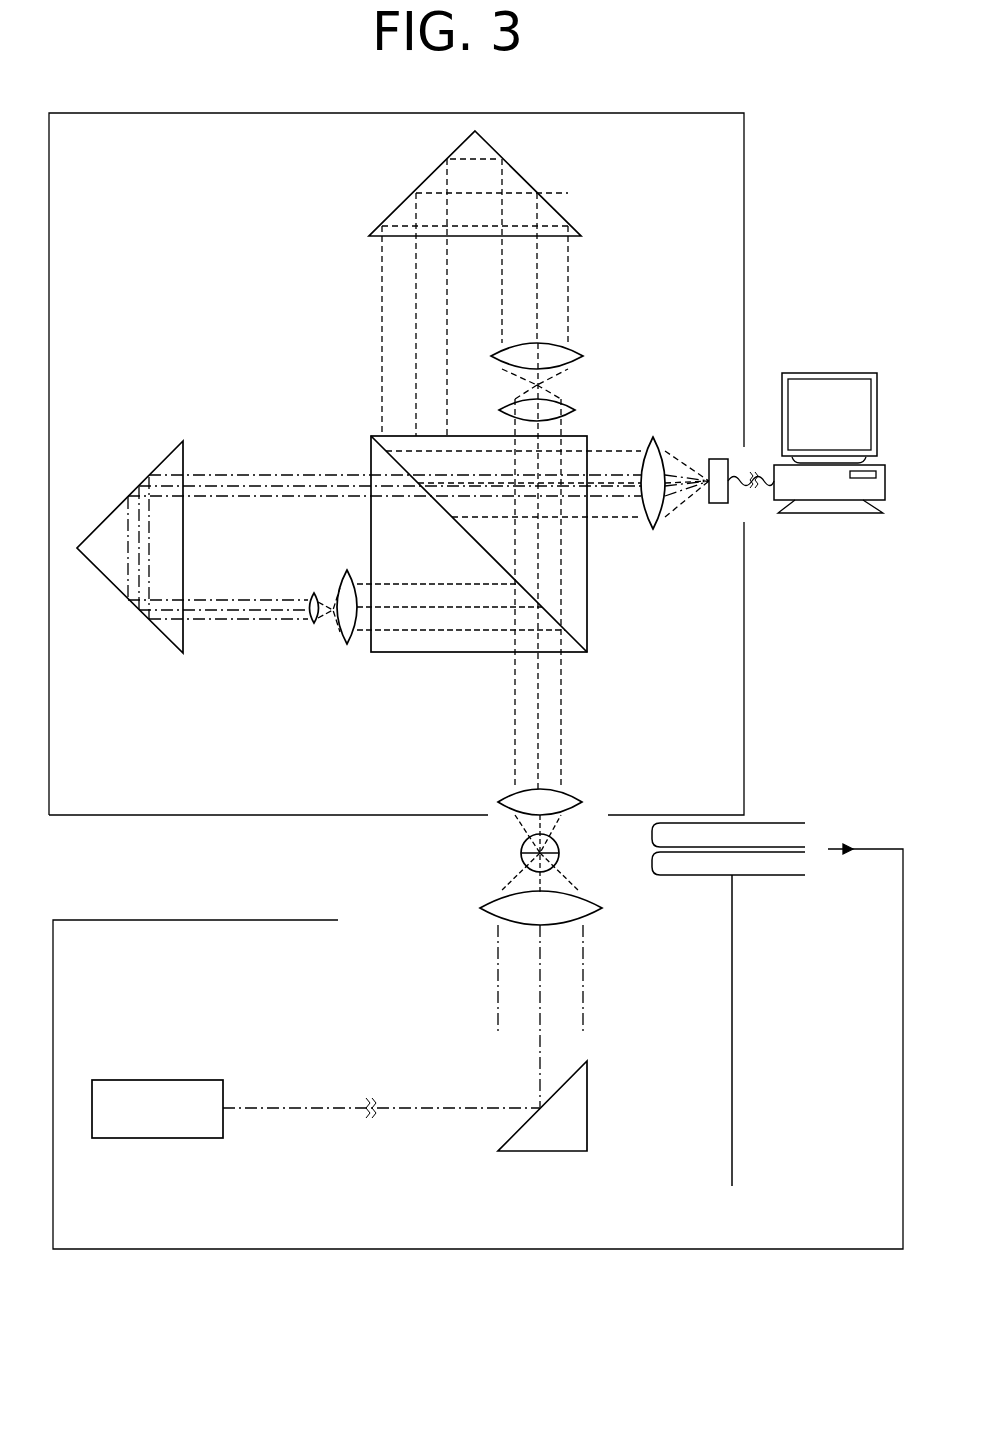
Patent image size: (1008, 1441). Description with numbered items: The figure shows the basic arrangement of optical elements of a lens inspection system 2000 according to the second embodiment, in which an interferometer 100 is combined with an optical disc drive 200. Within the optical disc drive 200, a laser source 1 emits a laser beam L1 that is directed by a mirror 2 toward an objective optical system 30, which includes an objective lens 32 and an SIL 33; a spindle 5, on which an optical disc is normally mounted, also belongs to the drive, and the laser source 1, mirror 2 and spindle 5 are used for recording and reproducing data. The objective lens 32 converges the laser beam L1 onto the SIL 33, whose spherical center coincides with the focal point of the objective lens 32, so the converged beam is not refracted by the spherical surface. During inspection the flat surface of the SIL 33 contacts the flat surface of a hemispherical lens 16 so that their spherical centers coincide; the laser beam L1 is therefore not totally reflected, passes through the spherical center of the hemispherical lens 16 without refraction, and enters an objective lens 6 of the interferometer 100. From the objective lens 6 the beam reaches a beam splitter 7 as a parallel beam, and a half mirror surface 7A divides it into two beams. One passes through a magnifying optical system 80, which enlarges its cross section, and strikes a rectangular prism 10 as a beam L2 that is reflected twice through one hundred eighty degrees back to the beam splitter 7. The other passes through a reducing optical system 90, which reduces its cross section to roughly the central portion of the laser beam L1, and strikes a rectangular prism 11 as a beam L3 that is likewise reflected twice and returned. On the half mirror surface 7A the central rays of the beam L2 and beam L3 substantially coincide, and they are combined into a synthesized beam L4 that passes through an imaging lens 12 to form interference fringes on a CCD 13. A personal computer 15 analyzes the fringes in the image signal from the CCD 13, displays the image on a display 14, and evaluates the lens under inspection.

The laser source 1 is at (175, 1085).
The mirror 2 is at (580, 1137).
The spindle 5 is at (775, 962).
The objective lens 6 is at (575, 795).
The beam splitter 7 is at (583, 637).
The half mirror surface 7A is at (573, 632).
The rectangular prism 10 is at (553, 217).
The rectangular prism 11 is at (177, 457).
The imaging lens 12 is at (655, 528).
The CCD 13 is at (719, 493).
The display 14 is at (832, 384).
The personal computer 15 is at (877, 498).
The hemispherical lens 16 is at (557, 843).
The objective optical system 30 is at (484, 983).
The objective lens 32 is at (433, 872).
The SIL 33 is at (520, 860).
The magnifying optical system 80 is at (583, 330).
The reducing optical system 90 is at (367, 650).
The interferometer 100 is at (726, 663).
The optical disc drive 200 is at (758, 1240).
The lens inspection system 2000 is at (829, 366).
The laser beam L1 is at (381, 1122).
The beam L2 is at (575, 290).
The beam L3 is at (225, 632).
The synthesized beam L4 is at (547, 497).